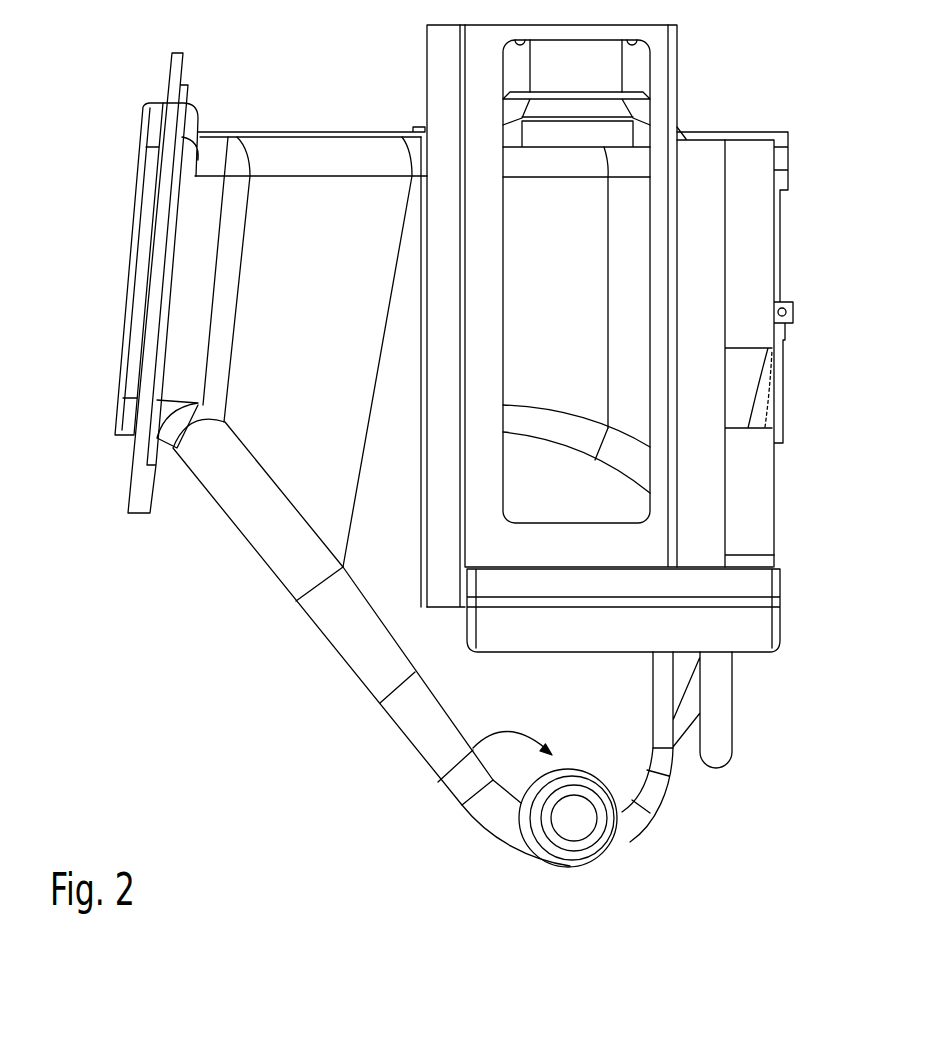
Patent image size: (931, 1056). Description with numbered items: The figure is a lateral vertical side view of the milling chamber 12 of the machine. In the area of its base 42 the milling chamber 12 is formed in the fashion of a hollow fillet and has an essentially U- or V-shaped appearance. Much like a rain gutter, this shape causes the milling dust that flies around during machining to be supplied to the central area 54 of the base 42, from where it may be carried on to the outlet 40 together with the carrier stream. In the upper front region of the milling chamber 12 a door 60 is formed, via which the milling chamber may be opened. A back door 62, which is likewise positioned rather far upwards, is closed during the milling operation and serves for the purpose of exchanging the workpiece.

The milling chamber 12 is at (265, 520).
The outlet 40 is at (578, 823).
The base 42 is at (318, 632).
The central area 54 is at (438, 780).
The door 60 is at (145, 270).
The back door 62 is at (780, 227).